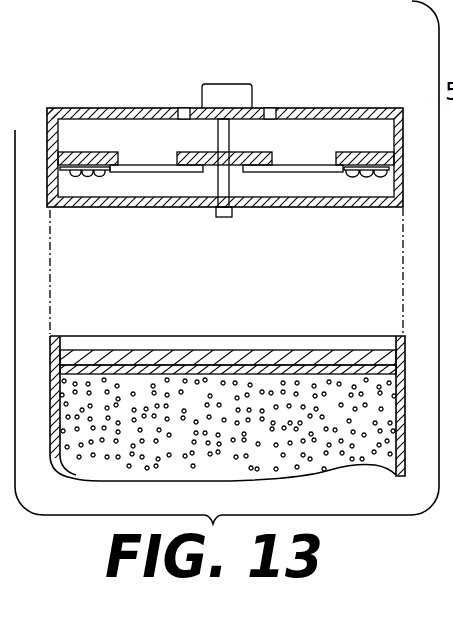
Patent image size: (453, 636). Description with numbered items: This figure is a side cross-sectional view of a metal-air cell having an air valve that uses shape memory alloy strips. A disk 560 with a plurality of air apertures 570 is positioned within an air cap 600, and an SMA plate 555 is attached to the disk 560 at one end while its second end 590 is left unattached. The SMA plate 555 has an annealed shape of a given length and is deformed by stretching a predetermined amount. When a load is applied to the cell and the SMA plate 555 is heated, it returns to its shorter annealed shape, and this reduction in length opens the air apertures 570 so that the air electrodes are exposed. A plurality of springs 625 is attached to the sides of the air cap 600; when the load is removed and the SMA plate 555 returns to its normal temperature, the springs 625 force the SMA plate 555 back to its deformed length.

The SMA plate 555 is at (147, 178).
The disk 560 is at (93, 157).
The air apertures 570 is at (146, 150).
The second end 590 is at (110, 172).
The air cap 600 is at (178, 104).
The springs 625 is at (90, 180).